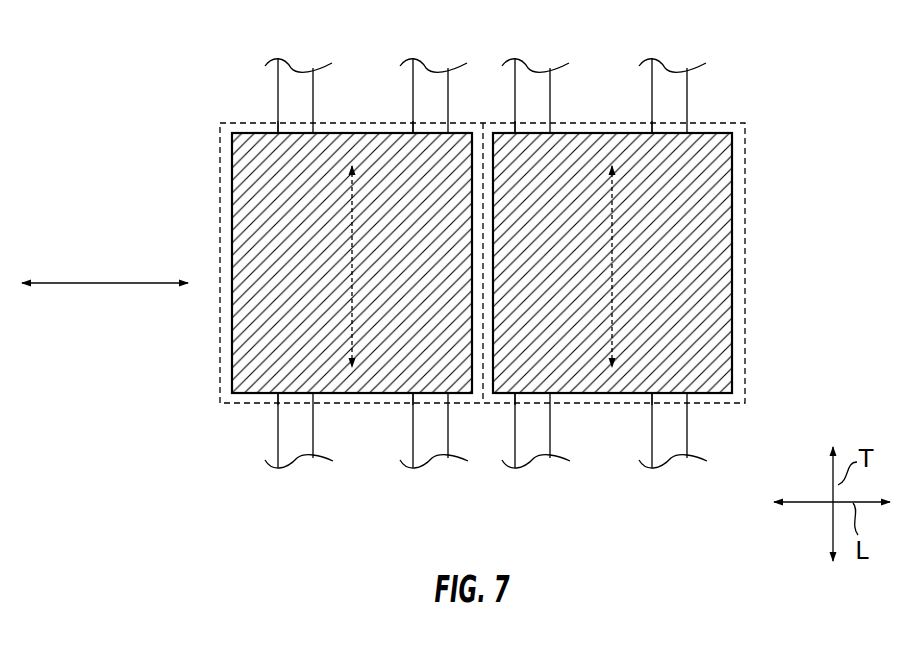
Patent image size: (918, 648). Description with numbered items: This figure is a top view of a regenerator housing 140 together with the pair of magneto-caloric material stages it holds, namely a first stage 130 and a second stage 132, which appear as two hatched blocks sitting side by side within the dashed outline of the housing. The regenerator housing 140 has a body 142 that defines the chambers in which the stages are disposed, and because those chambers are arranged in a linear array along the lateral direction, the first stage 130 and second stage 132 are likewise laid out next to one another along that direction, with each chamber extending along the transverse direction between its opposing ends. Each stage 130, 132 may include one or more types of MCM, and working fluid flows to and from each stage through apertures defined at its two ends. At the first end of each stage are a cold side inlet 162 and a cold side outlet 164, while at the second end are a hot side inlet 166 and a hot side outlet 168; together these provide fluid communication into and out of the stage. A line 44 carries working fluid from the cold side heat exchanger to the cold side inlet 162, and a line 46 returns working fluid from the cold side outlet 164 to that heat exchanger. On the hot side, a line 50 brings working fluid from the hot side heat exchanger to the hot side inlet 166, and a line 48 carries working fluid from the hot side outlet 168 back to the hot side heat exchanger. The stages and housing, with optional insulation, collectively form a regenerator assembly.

The line 44 is at (294, 446).
The line 46 is at (428, 447).
The line 48 is at (290, 78).
The line 50 is at (437, 80).
The first stage 130 is at (278, 197).
The second stage 132 is at (696, 200).
The regenerator housing 140 is at (216, 243).
The body 142 is at (746, 319).
The cold side inlet 162 is at (277, 408).
The cold side outlet 164 is at (410, 405).
The hot side inlet 166 is at (410, 121).
The hot side outlet 168 is at (276, 120).